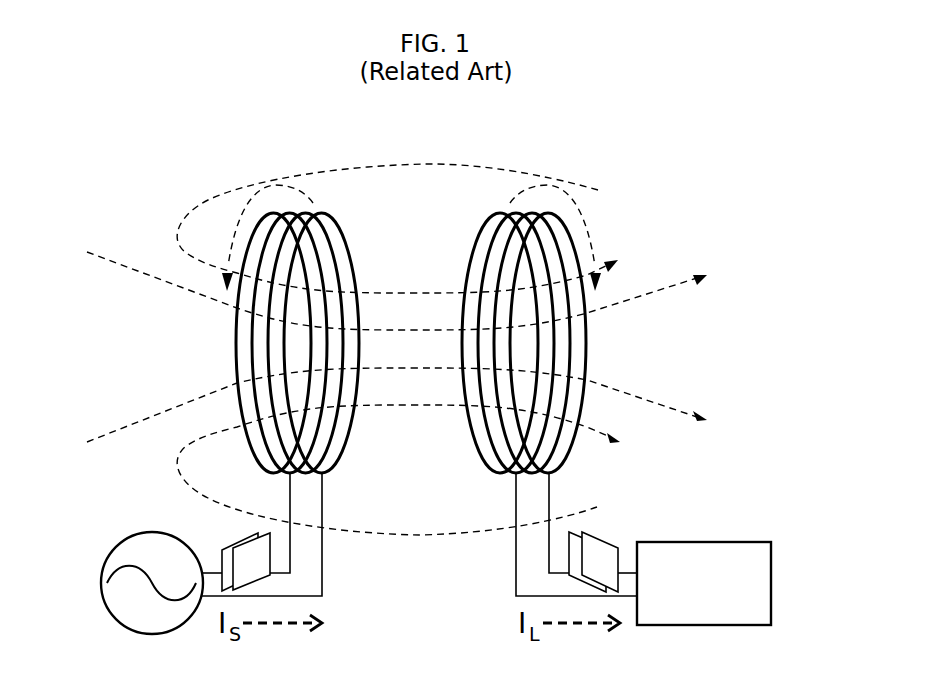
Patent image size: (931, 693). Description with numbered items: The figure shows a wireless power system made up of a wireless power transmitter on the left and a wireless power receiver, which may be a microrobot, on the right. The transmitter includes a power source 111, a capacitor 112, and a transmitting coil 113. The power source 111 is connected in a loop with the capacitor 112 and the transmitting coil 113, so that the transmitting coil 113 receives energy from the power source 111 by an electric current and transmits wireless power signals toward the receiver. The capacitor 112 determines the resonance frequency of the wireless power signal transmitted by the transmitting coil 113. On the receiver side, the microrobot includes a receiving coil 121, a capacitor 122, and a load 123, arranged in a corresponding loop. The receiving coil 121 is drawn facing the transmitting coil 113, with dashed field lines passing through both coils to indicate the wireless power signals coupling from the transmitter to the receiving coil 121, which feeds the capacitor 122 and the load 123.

The power source 111 is at (100, 582).
The capacitor 112 is at (238, 542).
The transmitting coil 113 is at (237, 343).
The receiving coil 121 is at (587, 343).
The capacitor 122 is at (600, 540).
The load 123 is at (771, 583).